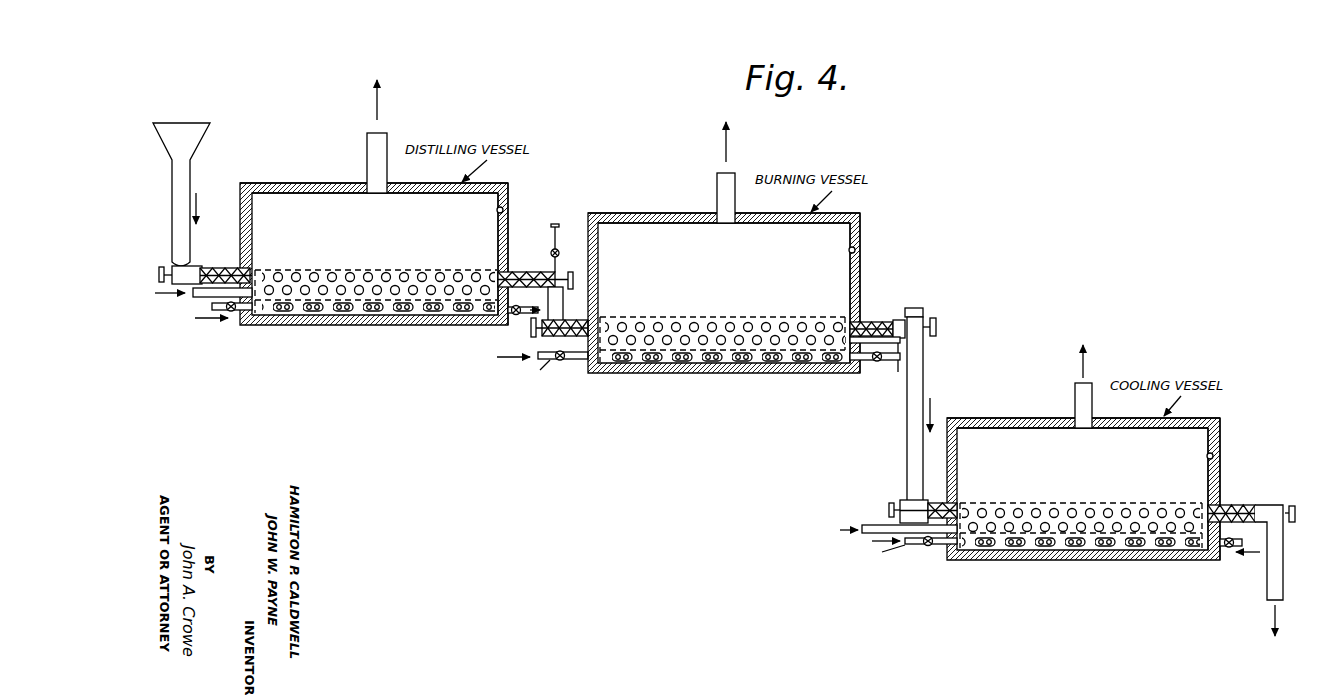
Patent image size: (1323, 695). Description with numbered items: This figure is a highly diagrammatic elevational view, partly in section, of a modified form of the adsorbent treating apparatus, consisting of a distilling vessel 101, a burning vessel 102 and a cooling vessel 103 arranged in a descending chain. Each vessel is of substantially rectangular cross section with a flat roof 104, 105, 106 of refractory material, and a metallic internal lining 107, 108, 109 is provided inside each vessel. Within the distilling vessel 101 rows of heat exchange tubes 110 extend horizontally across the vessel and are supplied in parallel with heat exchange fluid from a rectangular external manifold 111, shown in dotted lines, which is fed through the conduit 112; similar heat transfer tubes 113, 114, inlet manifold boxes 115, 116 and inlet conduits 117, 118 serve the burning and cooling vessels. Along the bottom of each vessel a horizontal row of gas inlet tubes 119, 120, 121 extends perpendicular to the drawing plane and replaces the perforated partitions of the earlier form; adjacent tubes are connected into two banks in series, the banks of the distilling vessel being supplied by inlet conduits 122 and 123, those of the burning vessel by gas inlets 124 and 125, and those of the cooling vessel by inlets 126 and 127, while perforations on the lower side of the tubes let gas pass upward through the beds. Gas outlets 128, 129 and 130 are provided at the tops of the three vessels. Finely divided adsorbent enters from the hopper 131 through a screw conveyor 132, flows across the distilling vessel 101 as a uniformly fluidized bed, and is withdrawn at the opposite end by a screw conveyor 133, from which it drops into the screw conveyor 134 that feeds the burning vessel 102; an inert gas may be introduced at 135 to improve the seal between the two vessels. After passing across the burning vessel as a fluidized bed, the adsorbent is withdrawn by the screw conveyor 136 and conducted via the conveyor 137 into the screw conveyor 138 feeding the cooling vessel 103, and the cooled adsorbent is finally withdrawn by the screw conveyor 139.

The distilling vessel 101 is at (303, 182).
The burning vessel 102 is at (696, 213).
The cooling vessel 103 is at (1001, 418).
The flat roof 104 is at (341, 174).
The flat roof 105 is at (639, 213).
The flat roof 106 is at (1051, 410).
The metallic internal lining 107 is at (503, 210).
The metallic internal lining 108 is at (856, 249).
The metallic internal lining 109 is at (1214, 455).
The heat exchange tubes 110 is at (414, 268).
The external manifold 111 is at (383, 270).
The conduit 112 is at (202, 298).
The heat transfer tubes 113 is at (717, 327).
The heat transfer tubes 114 is at (1098, 513).
The inlet manifold box 115 is at (761, 317).
The inlet manifold box 116 is at (1150, 503).
The inlet conduit 117 is at (898, 372).
The inlet conduit 118 is at (875, 524).
The gas inlet tubes 119 is at (354, 315).
The gas inlet tubes 120 is at (672, 362).
The gas inlet tubes 121 is at (1020, 548).
The inlet conduit 122 is at (246, 312).
The inlet conduit 123 is at (508, 316).
The gas inlet 124 is at (576, 360).
The gas inlet 125 is at (866, 364).
The gas inlet 126 is at (946, 546).
The gas inlet 127 is at (1217, 563).
The gas outlet 128 is at (367, 143).
The gas outlet 129 is at (717, 176).
The gas outlet 130 is at (1075, 390).
The hopper 131 is at (196, 150).
The screw conveyor 132 is at (220, 266).
The screw conveyor 133 is at (522, 270).
The screw conveyor 134 is at (573, 318).
The inert gas inlet 135 is at (561, 216).
The screw conveyor 136 is at (881, 322).
The conveyor 137 is at (926, 378).
The screw conveyor 138 is at (920, 500).
The screw conveyor 139 is at (1261, 490).